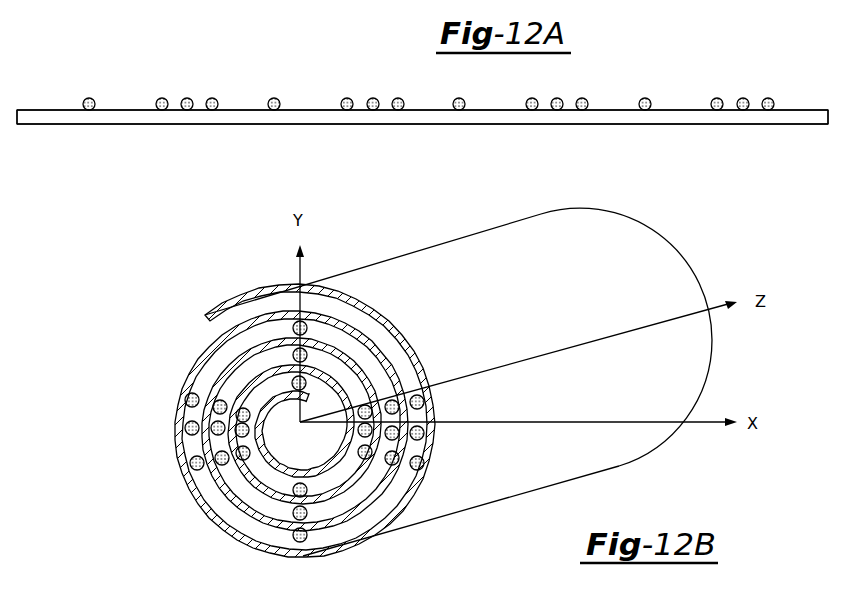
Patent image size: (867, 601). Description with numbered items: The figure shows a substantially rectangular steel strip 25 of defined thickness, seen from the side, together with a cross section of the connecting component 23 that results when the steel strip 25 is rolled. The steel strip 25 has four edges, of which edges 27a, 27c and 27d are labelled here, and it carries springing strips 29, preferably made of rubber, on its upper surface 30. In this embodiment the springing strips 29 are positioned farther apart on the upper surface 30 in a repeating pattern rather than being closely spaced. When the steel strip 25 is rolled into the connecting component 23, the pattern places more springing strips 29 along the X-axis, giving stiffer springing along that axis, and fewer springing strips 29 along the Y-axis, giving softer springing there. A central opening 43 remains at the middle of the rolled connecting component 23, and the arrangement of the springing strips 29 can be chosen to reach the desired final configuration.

In FIG. 12B, the connecting component 23 is at (680, 216).
In FIG. 12A, the steel strip 25 is at (678, 110).
In FIG. 12A, the edge of the steel strip 27a is at (17, 112).
In FIG. 12A, the edge of the steel strip 27c is at (829, 117).
In FIG. 12A, the edge of the steel strip 27d is at (462, 124).
In FIG. 12A, the springing strips 29 is at (276, 100).
In FIG. 12B, the springing strips 29 is at (298, 542).
In FIG. 12A, the upper surface of the steel strip 30 is at (120, 110).
In FIG. 12B, the central opening 43 is at (258, 424).